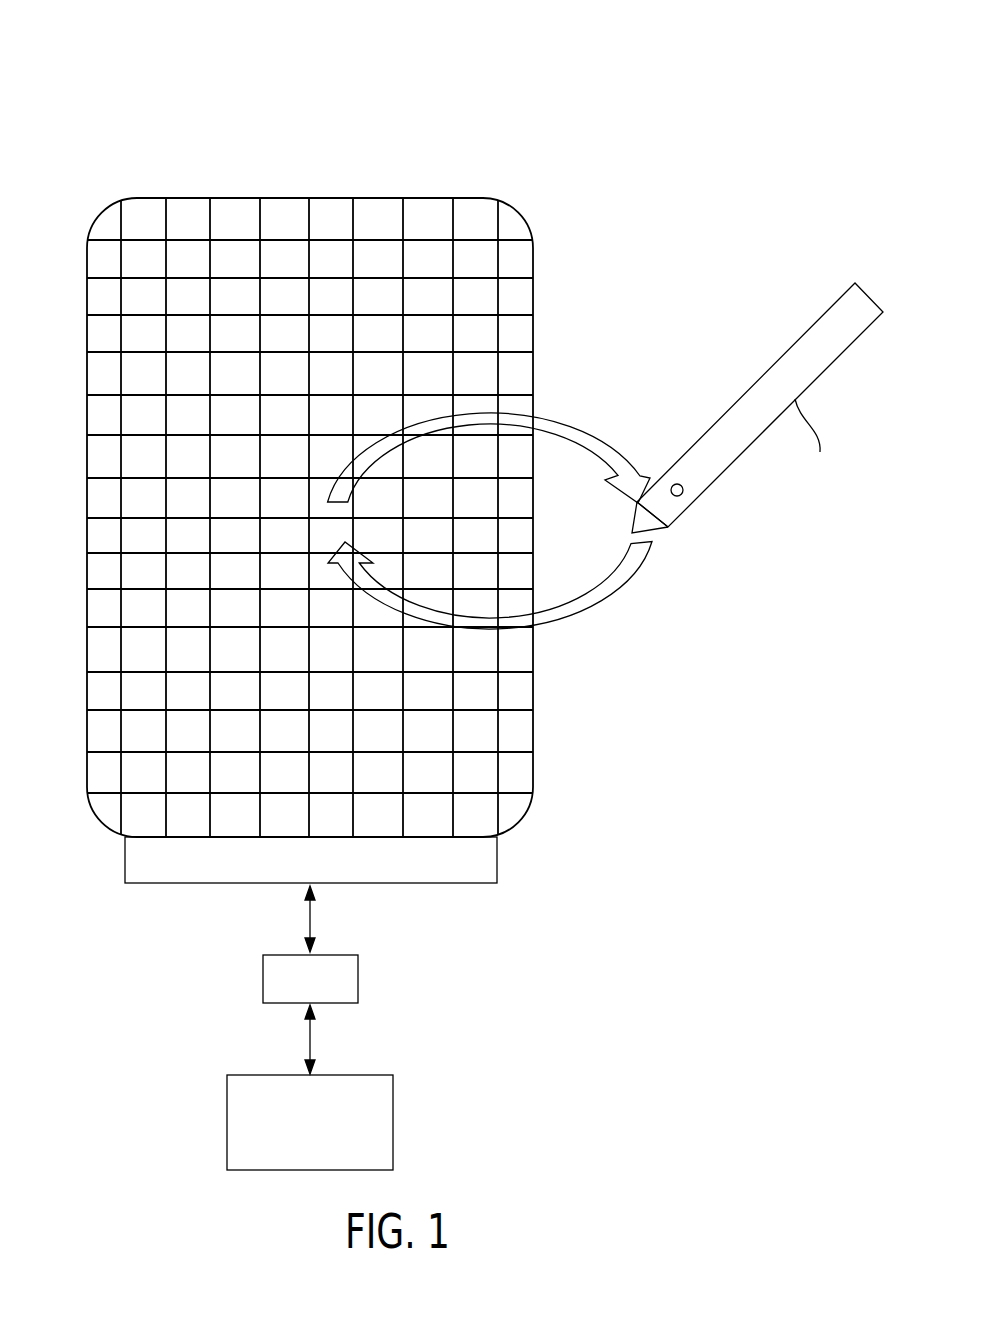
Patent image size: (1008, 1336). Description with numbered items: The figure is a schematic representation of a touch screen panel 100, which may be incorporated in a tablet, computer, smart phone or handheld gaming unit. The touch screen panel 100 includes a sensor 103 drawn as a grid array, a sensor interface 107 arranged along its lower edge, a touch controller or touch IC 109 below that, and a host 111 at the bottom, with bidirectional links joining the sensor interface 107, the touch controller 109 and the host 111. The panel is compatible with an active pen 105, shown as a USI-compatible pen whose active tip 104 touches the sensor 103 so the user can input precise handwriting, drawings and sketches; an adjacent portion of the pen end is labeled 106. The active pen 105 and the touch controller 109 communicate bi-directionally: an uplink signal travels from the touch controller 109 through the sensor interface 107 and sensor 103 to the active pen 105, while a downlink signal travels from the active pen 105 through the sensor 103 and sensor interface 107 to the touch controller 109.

The touch screen panel 100 is at (140, 93).
The sensor 103 is at (104, 213).
The active tip 104 is at (632, 533).
The active pen 105 is at (803, 337).
The stylus tip electrode 106 is at (668, 529).
The sensor interface 107 is at (121, 860).
The touch controller 109 is at (262, 982).
The host 111 is at (226, 1123).